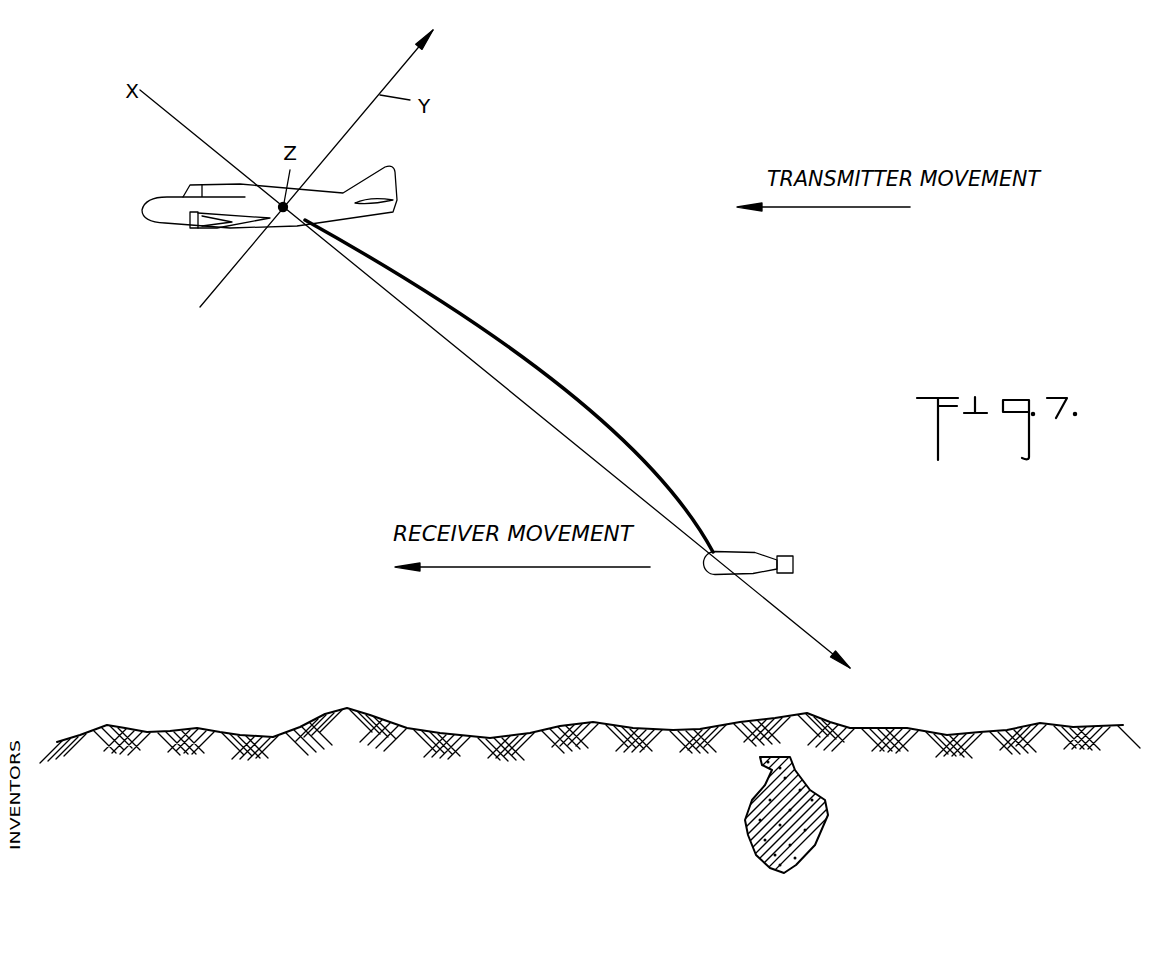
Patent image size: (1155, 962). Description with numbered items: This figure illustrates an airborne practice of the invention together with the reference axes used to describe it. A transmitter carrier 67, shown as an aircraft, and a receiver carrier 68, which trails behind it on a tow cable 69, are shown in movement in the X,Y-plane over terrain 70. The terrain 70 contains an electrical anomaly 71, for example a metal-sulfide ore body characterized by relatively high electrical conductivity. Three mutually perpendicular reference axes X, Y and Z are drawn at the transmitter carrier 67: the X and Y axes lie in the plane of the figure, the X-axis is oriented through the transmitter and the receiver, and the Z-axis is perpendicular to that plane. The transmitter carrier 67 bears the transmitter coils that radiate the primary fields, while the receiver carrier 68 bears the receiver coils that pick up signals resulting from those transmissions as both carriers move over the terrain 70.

The transmitter carrier 67 is at (162, 218).
The receiver carrier 68 is at (747, 560).
The tow cable 69 is at (593, 413).
The terrain 70 is at (547, 731).
The electrical anomaly 71 is at (807, 822).